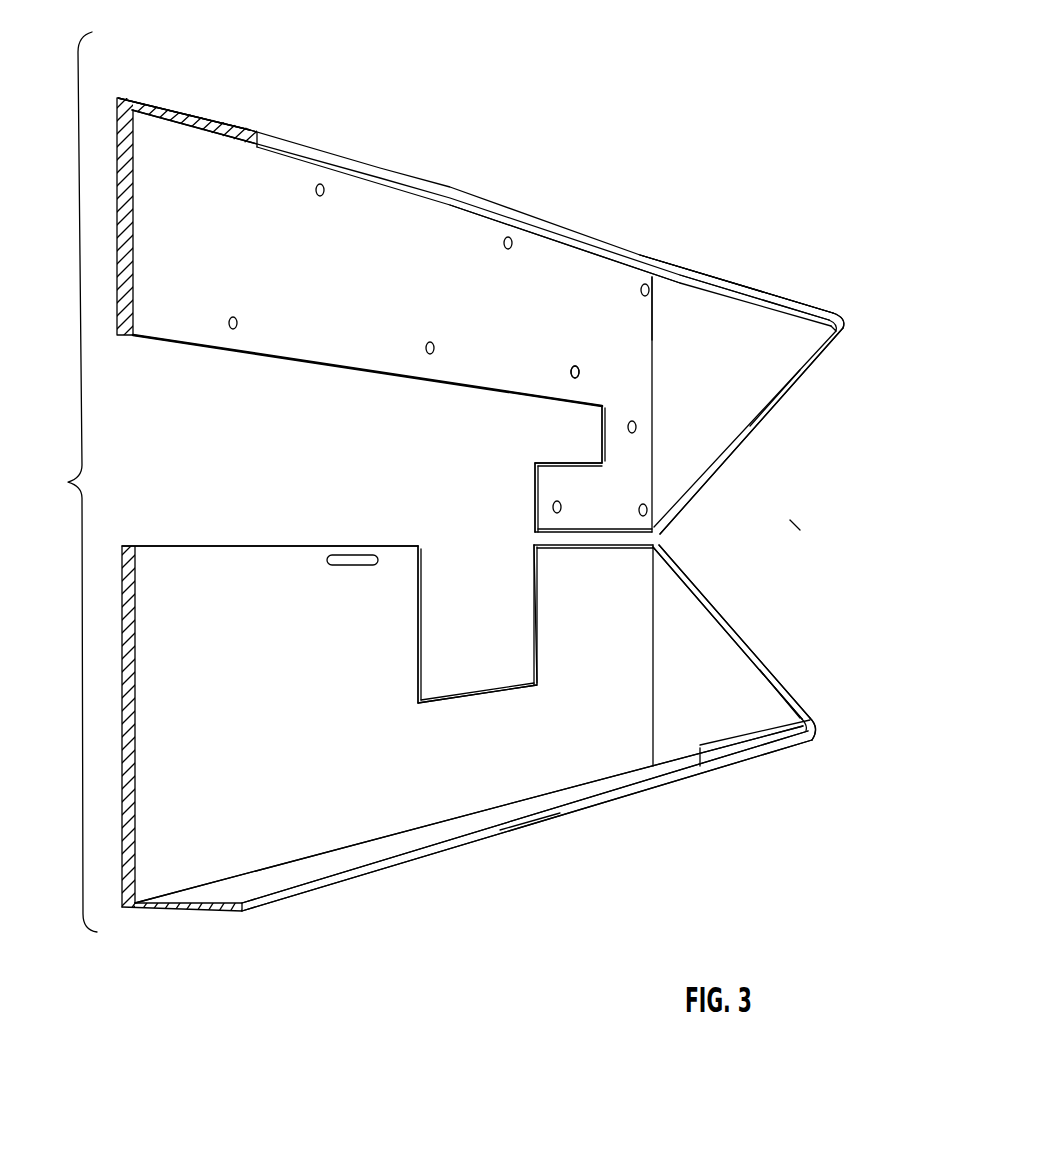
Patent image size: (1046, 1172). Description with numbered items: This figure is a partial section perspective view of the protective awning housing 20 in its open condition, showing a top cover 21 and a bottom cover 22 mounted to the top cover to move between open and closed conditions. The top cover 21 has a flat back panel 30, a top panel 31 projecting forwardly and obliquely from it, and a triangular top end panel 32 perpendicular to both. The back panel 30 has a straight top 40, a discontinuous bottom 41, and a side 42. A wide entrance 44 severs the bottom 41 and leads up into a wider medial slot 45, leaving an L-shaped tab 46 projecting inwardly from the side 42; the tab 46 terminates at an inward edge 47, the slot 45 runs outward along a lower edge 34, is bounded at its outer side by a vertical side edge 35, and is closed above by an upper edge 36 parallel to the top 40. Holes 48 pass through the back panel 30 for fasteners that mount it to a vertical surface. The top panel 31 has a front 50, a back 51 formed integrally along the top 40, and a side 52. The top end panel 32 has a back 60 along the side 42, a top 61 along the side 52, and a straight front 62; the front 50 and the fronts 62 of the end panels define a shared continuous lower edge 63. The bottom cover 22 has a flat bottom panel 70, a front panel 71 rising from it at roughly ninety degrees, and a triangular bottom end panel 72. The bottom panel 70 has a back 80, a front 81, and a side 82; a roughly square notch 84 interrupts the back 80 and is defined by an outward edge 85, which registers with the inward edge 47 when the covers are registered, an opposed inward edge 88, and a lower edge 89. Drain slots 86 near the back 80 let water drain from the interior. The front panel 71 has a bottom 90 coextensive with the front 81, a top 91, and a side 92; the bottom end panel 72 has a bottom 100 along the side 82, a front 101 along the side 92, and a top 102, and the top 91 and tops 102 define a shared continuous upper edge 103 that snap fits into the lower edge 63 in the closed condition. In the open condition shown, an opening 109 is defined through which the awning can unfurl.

The protective awning housing 20 is at (56, 482).
The top cover 21 is at (806, 295).
The bottom cover 22 is at (791, 752).
The back panel 30 is at (292, 338).
The top panel 31 is at (515, 207).
The top end panel 32 is at (765, 390).
The lower edge 34 is at (600, 445).
The side edge 35 is at (600, 410).
The upper edge 36 is at (550, 400).
The top 40 is at (114, 100).
The bottom 41 is at (660, 562).
The side 42 is at (650, 467).
The entrance 44 is at (495, 500).
The slot 45 is at (465, 420).
The L-shaped tab 46 is at (585, 492).
The inward edge 47 is at (535, 475).
The holes 48 is at (326, 192).
The front 50 is at (622, 243).
The back 51 is at (572, 248).
The side 52 is at (800, 322).
The back 60 is at (655, 311).
The top 61 is at (735, 298).
The front 62 is at (790, 393).
The lower edge 63 is at (390, 175).
The bottom panel 70 is at (222, 546).
The front panel 71 is at (418, 842).
The bottom end panel 72 is at (740, 668).
The back 80 is at (165, 544).
The front 81 is at (170, 887).
The side 82 is at (650, 600).
The notch 84 is at (480, 628).
The outward edge 85 is at (538, 648).
The drain slots 86 is at (352, 566).
The inward edge 88 is at (424, 600).
The lower edge 89 is at (426, 700).
The bottom 90 is at (258, 875).
The top 91 is at (312, 888).
The side 92 is at (705, 735).
The bottom 100 is at (658, 635).
The front 101 is at (814, 728).
The top 102 is at (800, 708).
The upper edge 103 is at (547, 815).
The opening 109 is at (796, 525).